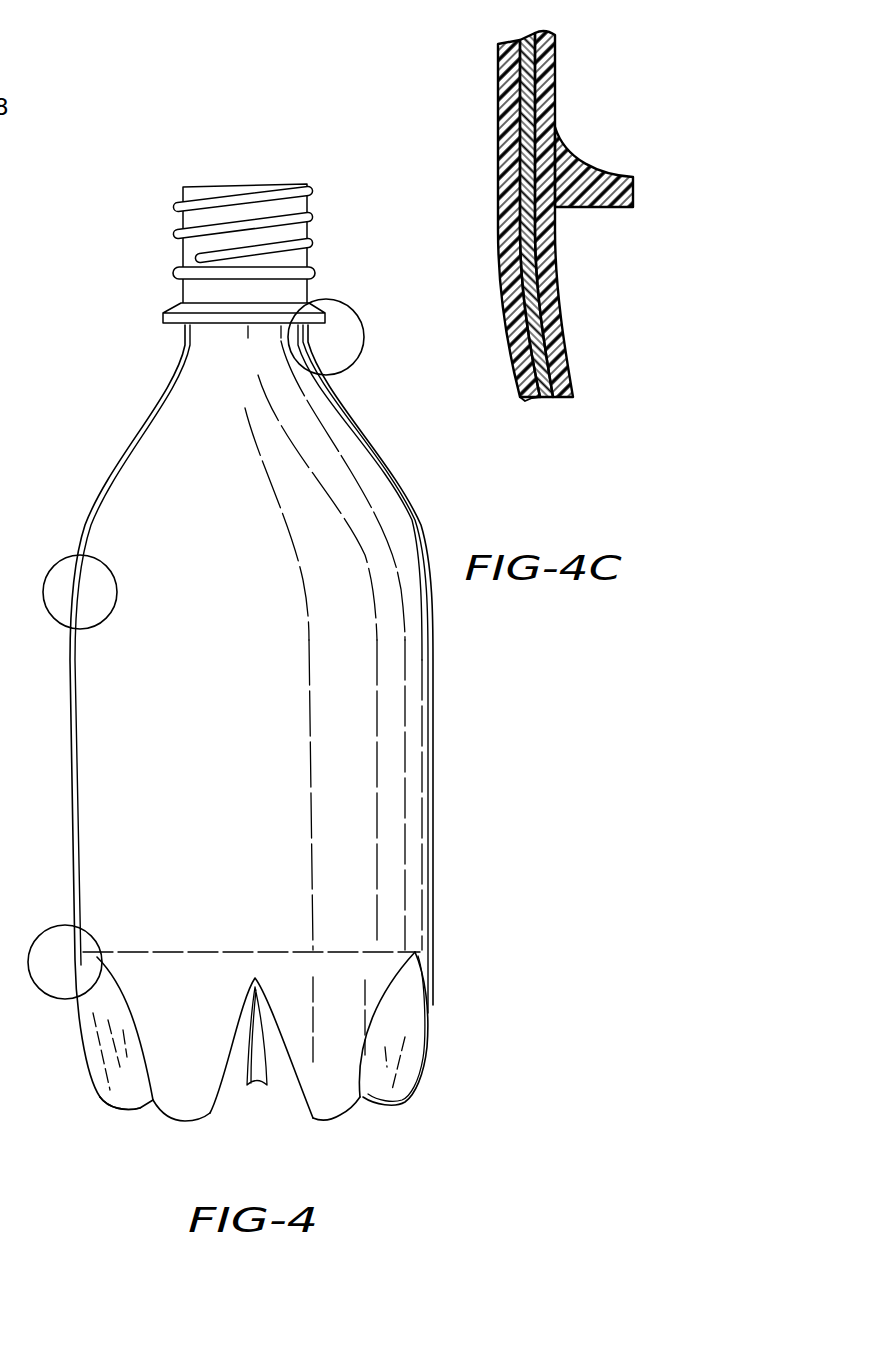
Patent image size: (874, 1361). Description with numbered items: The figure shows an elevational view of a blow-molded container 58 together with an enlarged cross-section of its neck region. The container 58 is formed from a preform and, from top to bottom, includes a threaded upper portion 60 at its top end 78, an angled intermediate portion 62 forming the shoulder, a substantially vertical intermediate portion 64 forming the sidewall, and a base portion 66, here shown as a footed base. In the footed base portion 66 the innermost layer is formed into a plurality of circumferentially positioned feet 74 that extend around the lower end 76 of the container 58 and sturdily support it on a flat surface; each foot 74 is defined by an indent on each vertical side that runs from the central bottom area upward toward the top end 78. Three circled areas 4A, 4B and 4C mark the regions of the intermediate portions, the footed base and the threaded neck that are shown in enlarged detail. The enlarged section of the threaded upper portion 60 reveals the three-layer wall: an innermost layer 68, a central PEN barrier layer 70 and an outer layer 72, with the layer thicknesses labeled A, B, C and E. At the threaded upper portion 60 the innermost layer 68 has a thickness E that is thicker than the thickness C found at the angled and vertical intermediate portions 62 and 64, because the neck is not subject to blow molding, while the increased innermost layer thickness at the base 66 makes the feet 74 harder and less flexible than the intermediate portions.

In FIG. 4, the container 58 is at (436, 641).
In FIG. 4, the threaded upper portion 60 is at (307, 205).
In FIG. 4C, the threaded upper portion 60 is at (497, 83).
In FIG. 4, the top end 78 is at (190, 185).
In FIG. 4, the angled intermediate portion 62 is at (380, 465).
In FIG. 4C, the angled intermediate portion 62 is at (520, 392).
In FIG. 4, the substantially vertical intermediate portion 64 is at (436, 820).
In FIG. 4, the base portion 66 is at (425, 1053).
In FIG. 4, the feet 74 is at (188, 1102).
In FIG. 4, the lower end 76 is at (141, 1120).
In FIG. 4C, the innermost layer 68 is at (530, 400).
In FIG. 4C, the central PEN barrier layer 70 is at (547, 400).
In FIG. 4C, the outer layer 72 is at (563, 400).
In FIG. 4, the area 4A is at (60, 622).
In FIG. 4, the area 4B is at (46, 936).
In FIG. 4, the area 4C is at (361, 305).
In FIG. 4C, the thickness A is at (575, 304).
In FIG. 4C, the thickness B is at (592, 243).
In FIG. 4C, the thickness C is at (585, 359).
In FIG. 4C, the thickness E is at (597, 190).